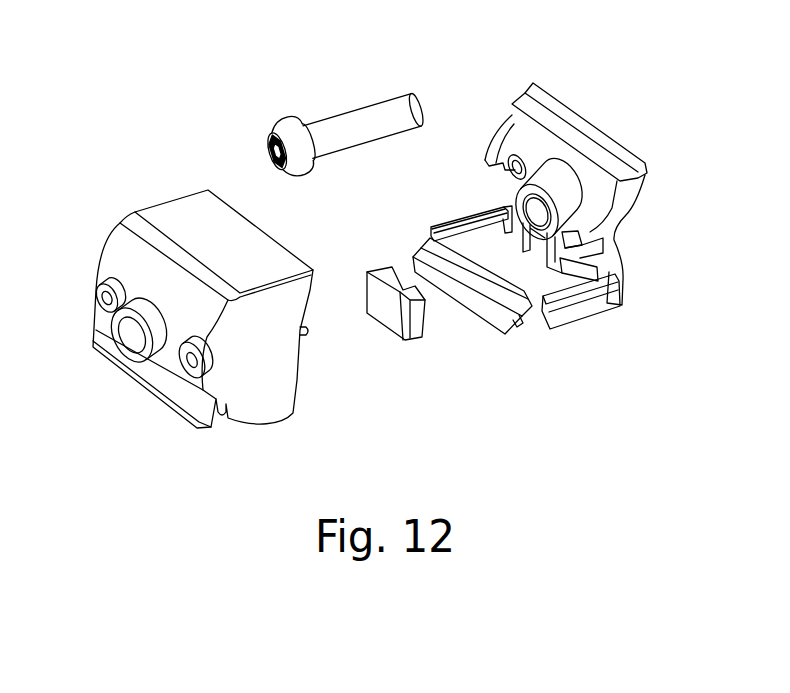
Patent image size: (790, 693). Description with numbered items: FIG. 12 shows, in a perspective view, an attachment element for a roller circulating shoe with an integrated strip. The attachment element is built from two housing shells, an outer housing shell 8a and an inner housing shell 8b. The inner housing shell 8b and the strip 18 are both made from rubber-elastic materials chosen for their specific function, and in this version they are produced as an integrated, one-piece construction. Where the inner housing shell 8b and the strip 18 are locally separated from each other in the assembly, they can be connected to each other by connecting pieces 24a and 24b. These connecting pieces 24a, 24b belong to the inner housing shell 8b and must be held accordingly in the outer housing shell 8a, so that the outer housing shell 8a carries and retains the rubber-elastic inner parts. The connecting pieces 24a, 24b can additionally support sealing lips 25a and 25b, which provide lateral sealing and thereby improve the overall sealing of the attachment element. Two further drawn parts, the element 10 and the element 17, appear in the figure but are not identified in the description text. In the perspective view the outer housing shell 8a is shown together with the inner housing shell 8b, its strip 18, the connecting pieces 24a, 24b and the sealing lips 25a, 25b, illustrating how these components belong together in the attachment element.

The outer housing shell 8a is at (263, 387).
The inner housing shell 8b is at (607, 225).
The insert block 10 is at (392, 310).
The screw 17 is at (355, 130).
The strip 18 is at (480, 303).
The connecting piece 24a is at (593, 297).
The connecting piece 24b is at (487, 218).
The sealing lip 25a is at (572, 317).
The sealing lip 25b is at (468, 238).